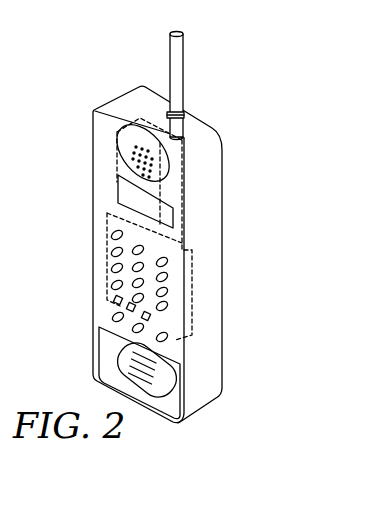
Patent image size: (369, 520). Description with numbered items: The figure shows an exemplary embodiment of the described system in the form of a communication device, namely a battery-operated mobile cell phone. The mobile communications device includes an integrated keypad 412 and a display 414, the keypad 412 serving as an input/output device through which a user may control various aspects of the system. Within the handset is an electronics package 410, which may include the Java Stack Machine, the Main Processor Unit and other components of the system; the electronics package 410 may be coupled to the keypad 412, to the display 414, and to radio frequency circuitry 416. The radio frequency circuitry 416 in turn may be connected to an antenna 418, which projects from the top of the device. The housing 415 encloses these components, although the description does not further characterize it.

The electronics package 410 is at (190, 296).
The keypad 412 is at (113, 276).
The display 414 is at (118, 212).
The housing 415 is at (218, 350).
The radio frequency circuitry 416 is at (118, 170).
The antenna 418 is at (182, 70).